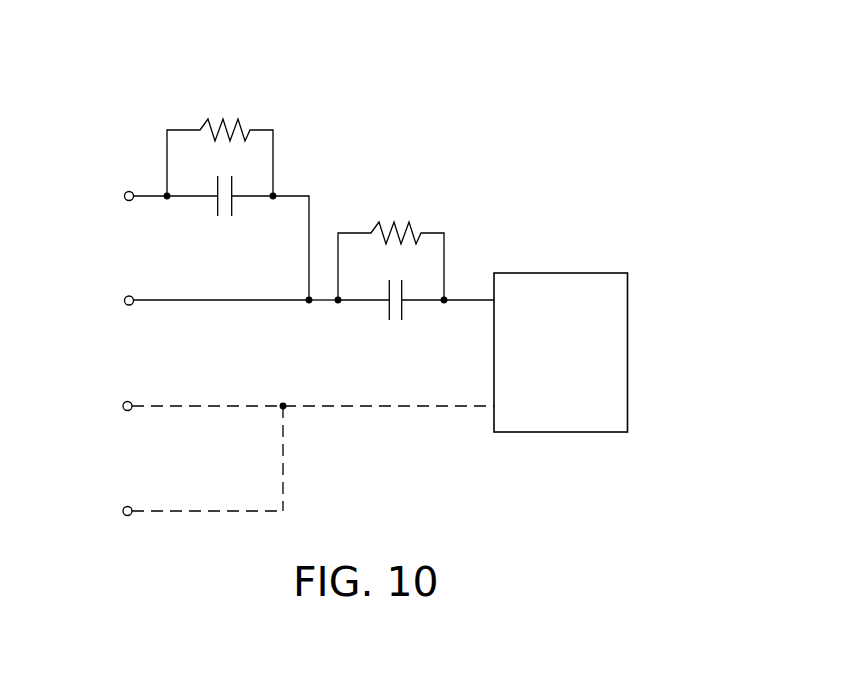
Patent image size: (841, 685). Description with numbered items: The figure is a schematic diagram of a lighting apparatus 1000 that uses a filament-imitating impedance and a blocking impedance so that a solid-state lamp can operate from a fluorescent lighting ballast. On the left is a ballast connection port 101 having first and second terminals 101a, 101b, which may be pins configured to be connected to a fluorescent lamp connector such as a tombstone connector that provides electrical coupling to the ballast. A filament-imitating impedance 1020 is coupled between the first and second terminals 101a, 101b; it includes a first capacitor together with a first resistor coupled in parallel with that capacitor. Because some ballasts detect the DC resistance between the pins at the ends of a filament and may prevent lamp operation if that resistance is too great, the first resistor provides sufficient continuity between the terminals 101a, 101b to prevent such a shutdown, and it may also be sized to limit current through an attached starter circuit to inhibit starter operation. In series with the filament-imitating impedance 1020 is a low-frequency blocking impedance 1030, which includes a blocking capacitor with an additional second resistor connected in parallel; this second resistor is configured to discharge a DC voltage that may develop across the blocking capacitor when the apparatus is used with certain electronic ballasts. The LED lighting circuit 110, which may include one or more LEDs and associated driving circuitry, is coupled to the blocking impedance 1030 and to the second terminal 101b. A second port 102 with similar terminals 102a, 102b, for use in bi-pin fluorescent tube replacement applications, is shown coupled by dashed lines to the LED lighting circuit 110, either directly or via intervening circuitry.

The lighting apparatus 1000 is at (550, 86).
The filament-imitating impedance 1020 is at (316, 129).
The low-frequency blocking impedance 1030 is at (439, 203).
The LED lighting circuit 110 is at (560, 273).
The ballast connection port 101 is at (115, 195).
The first terminal 101a is at (139, 211).
The second terminal 101b is at (141, 290).
The second port 102 is at (115, 406).
The terminal 102a is at (139, 421).
The terminal 102b is at (138, 497).